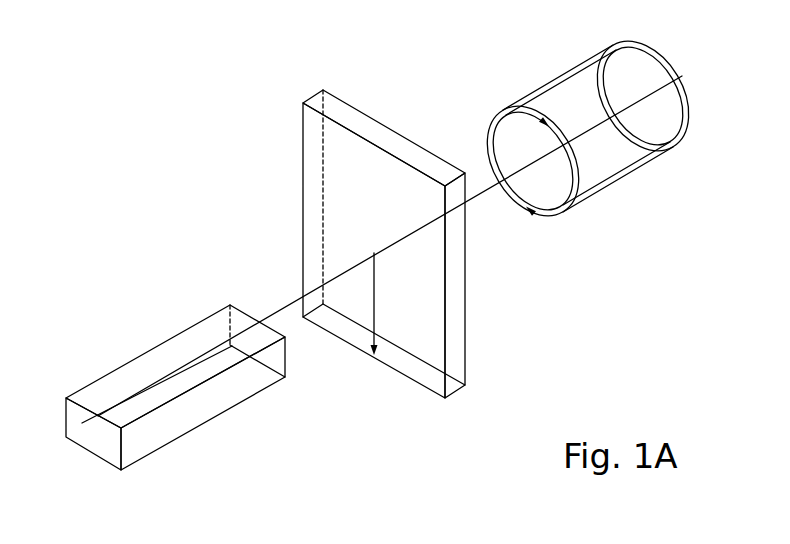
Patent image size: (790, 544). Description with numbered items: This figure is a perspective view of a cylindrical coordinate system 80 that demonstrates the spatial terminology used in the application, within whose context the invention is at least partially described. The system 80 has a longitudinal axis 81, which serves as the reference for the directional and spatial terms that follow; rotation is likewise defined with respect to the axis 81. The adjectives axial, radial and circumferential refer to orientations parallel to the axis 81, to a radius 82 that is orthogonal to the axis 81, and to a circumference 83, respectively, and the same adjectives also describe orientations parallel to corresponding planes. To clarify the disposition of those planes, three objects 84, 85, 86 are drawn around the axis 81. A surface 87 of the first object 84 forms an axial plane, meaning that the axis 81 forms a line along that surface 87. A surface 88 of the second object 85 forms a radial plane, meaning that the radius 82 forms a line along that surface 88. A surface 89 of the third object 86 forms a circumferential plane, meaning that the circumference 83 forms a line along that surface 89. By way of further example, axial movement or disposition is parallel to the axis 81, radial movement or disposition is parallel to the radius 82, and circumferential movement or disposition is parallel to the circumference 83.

The cylindrical coordinate system 80 is at (262, 139).
The longitudinal axis 81 is at (679, 79).
The radius 82 is at (374, 300).
The circumference 83 is at (490, 128).
The object 84 is at (147, 460).
The object 85 is at (480, 396).
The object 86 is at (618, 196).
The surface 87 is at (140, 372).
The surface 88 is at (315, 208).
The surface 89 is at (557, 79).